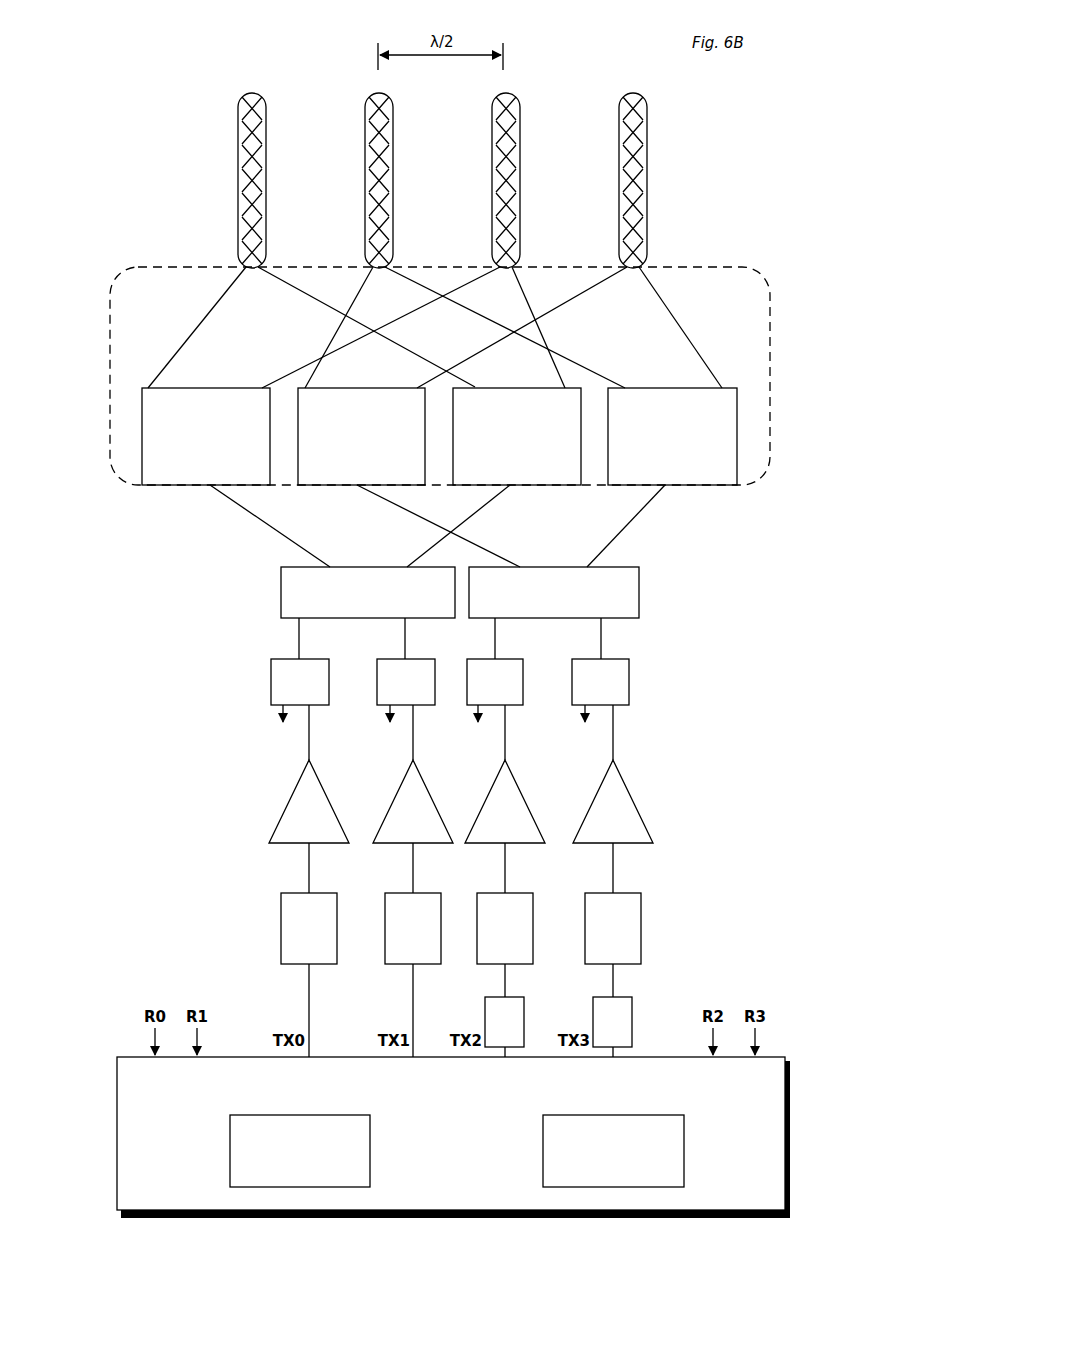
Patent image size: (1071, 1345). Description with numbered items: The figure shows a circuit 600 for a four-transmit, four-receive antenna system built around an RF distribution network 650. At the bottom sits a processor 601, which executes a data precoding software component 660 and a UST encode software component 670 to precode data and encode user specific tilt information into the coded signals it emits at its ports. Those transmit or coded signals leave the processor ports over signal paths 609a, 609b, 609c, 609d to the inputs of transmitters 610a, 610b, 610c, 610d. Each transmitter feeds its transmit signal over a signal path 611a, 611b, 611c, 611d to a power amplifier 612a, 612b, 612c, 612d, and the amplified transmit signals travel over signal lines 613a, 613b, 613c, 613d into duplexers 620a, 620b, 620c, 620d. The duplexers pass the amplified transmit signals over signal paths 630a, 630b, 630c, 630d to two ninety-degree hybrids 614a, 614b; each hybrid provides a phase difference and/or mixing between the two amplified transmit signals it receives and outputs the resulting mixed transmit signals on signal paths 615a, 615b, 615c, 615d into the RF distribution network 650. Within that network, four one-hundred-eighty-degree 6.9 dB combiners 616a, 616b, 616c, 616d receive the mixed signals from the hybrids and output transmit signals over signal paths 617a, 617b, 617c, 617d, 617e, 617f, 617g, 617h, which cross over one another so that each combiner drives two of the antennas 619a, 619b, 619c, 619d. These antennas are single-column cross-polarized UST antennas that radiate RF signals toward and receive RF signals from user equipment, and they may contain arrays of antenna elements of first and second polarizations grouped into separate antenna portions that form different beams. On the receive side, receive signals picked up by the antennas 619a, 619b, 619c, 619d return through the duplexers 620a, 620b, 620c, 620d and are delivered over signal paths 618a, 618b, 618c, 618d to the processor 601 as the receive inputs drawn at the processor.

The circuit 600 is at (213, 38).
The RF distribution network 650 is at (126, 268).
The antenna 619a is at (237, 118).
The antenna 619b is at (364, 118).
The antenna 619c is at (491, 118).
The antenna 619d is at (618, 118).
The signal path 617a is at (150, 379).
The signal path 617b is at (268, 379).
The signal path 617c is at (321, 380).
The signal path 617d is at (412, 380).
The signal path 617e is at (478, 383).
The signal path 617f is at (560, 382).
The signal path 617g is at (623, 380).
The signal path 617h is at (719, 375).
The 180° 6.9 dB combiner 616a is at (206, 436).
The 180° 6.9 dB combiner 616b is at (361, 436).
The 180° 6.9 dB combiner 616c is at (517, 436).
The 180° 6.9 dB combiner 616d is at (672, 436).
The signal path 615a is at (288, 548).
The signal path 615b is at (414, 559).
The signal path 615c is at (498, 554).
The signal path 615d is at (618, 540).
The 90° hybrid 614a is at (368, 592).
The 90° hybrid 614b is at (554, 592).
The signal path 630a is at (299, 647).
The signal path 630b is at (405, 647).
The signal path 630c is at (495, 645).
The signal path 630d is at (601, 647).
The duplexer 620a is at (300, 682).
The duplexer 620b is at (406, 682).
The duplexer 620c is at (495, 682).
The duplexer 620d is at (600, 682).
The signal path 618a is at (276, 716).
The signal path 618b is at (383, 716).
The signal path 618c is at (472, 710).
The signal path 618d is at (578, 716).
The signal line 613a is at (302, 754).
The signal line 613b is at (407, 754).
The signal line 613c is at (507, 760).
The signal line 613d is at (615, 760).
The power amplifier 612a is at (309, 801).
The power amplifier 612b is at (413, 801).
The power amplifier 612c is at (505, 801).
The power amplifier 612d is at (613, 801).
The signal path 611a is at (308, 868).
The signal path 611b is at (413, 868).
The signal path 611c is at (507, 871).
The signal path 611d is at (615, 871).
The transmitter 610a is at (309, 928).
The transmitter 610b is at (413, 928).
The transmitter 610c is at (505, 928).
The transmitter 610d is at (613, 928).
The signal path 609a is at (308, 985).
The signal path 609b is at (413, 985).
The signal path 609c is at (507, 988).
The signal path 609d is at (615, 988).
The processor 601 is at (453, 1137).
The data precoding software component 660 is at (300, 1151).
The UST encode software component 670 is at (613, 1151).